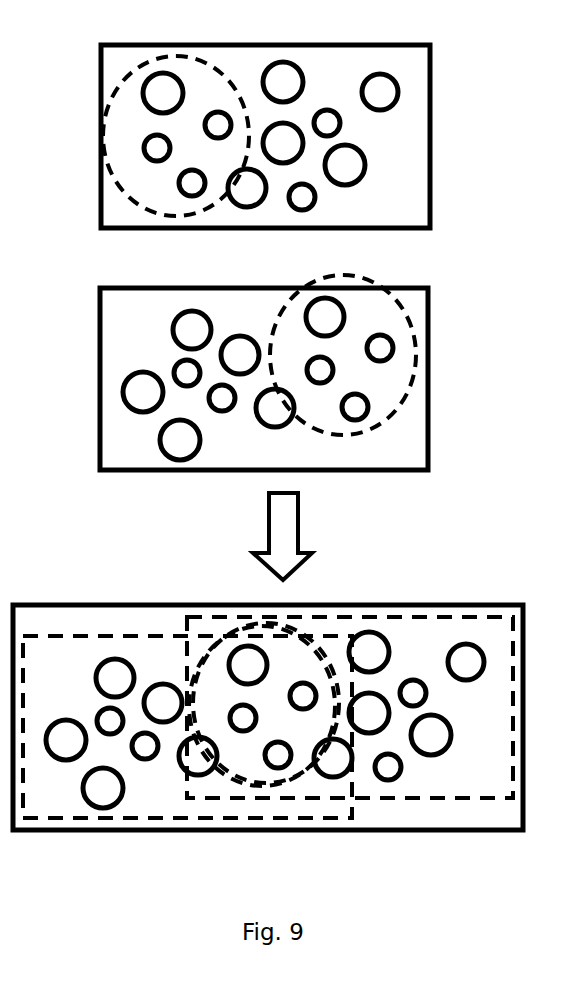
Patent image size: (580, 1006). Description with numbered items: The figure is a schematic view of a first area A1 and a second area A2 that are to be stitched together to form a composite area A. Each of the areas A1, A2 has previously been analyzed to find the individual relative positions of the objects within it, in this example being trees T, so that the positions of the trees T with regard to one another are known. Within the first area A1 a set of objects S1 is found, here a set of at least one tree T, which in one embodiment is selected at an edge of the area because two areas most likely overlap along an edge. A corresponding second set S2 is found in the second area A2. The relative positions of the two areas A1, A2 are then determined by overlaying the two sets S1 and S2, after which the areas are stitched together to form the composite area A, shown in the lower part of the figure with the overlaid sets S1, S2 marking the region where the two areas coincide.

The trees T is at (395, 95).
The first set of objects S1 is at (113, 190).
The second set of objects S2 is at (402, 403).
The first area A1 is at (307, 421).
The second area A2 is at (225, 553).
The composite area A is at (465, 833).